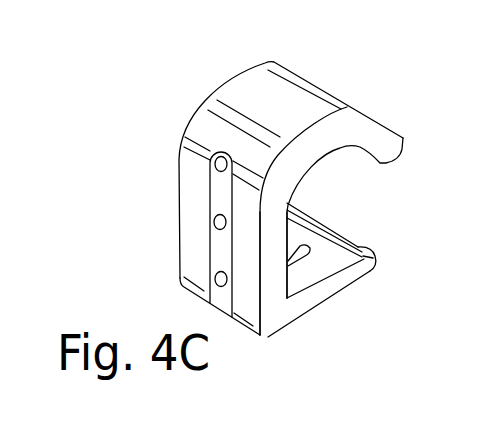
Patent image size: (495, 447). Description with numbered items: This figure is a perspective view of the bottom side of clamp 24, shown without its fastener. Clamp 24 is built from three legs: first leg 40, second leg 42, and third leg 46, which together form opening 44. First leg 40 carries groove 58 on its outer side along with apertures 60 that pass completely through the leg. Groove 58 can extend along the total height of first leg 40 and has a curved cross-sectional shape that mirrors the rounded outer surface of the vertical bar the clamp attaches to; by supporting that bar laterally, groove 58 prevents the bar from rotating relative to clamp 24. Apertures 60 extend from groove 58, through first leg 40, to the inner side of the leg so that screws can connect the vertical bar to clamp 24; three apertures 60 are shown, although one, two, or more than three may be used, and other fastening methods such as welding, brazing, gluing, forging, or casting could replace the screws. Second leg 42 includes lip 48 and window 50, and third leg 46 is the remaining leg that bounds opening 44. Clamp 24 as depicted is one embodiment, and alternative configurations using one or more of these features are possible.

The clamp 24 is at (195, 79).
The first leg 40 is at (267, 247).
The second leg 42 is at (323, 295).
The opening 44 is at (390, 217).
The third leg 46 is at (318, 143).
The lip 48 is at (373, 258).
The window 50 is at (293, 232).
The groove 58 is at (218, 248).
The apertures 60 is at (214, 168).